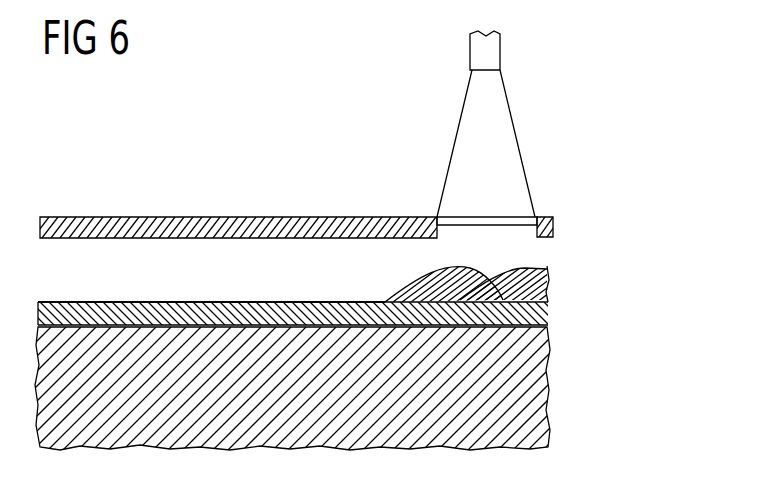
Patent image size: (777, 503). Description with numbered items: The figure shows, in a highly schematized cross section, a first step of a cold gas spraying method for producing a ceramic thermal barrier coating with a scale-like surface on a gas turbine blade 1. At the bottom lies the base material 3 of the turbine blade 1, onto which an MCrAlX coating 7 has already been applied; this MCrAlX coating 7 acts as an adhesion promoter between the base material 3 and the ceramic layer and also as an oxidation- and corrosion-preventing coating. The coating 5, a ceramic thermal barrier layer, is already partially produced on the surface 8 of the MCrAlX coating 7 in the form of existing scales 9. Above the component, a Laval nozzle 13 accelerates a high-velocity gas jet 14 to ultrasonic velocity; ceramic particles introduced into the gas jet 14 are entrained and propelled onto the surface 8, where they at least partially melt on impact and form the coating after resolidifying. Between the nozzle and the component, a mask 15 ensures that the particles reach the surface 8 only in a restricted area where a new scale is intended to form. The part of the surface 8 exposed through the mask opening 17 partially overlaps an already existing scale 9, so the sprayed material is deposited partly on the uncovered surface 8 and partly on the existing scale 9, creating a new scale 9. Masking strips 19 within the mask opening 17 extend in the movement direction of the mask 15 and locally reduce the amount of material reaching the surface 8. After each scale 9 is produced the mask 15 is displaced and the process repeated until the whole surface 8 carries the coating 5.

The gas turbine blade 1 is at (612, 350).
The base material 3 is at (535, 392).
The coating 5 is at (548, 282).
The MCrAlX coating 7 is at (548, 312).
The surface 8 is at (275, 301).
The scale 9 is at (420, 272).
The Laval nozzle 13 is at (493, 52).
The high-velocity gas jet 14 is at (513, 170).
The mask 15 is at (288, 222).
The mask opening 17 is at (496, 199).
The masking strip 19 is at (478, 221).